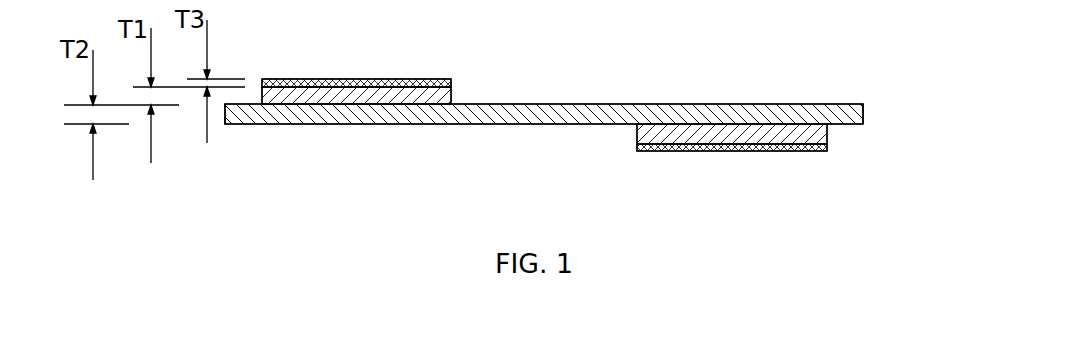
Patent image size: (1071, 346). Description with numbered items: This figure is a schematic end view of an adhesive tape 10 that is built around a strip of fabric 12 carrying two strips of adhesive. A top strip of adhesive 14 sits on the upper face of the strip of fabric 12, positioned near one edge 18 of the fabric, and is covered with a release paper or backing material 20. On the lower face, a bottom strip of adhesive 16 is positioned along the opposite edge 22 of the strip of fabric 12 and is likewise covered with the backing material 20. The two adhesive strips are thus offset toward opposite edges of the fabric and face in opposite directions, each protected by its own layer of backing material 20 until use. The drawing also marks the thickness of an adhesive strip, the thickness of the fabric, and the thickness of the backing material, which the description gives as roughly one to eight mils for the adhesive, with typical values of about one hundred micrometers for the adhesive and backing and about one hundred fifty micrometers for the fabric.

The adhesive tape 10 is at (752, 52).
The strip of fabric 12 is at (481, 126).
The top strip of adhesive 14 is at (452, 93).
The bottom strip of adhesive 16 is at (637, 138).
The edge 18 is at (225, 140).
The backing material 20 is at (375, 80).
The opposite edge 22 is at (863, 140).